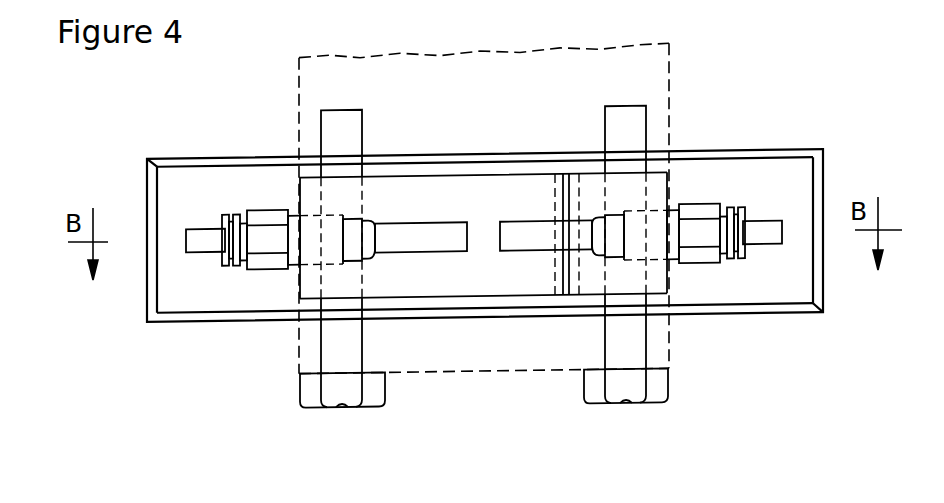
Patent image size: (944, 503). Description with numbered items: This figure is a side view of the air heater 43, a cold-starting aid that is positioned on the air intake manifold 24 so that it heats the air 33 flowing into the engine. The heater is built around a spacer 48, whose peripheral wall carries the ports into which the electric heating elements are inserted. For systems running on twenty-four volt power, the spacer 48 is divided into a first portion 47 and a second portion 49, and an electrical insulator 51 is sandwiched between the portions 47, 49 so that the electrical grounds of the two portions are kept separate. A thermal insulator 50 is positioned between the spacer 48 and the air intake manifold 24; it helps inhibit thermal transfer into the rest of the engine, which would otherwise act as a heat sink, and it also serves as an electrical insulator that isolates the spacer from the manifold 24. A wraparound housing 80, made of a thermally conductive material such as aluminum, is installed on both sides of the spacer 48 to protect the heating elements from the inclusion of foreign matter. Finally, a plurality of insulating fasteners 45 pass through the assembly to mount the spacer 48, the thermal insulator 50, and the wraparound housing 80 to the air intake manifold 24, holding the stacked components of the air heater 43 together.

The air intake manifold 24 is at (500, 68).
The air 33 is at (488, 375).
The air heater 43 is at (768, 134).
The insulating fasteners 45 is at (352, 408).
The first portion 47 is at (660, 275).
The spacer 48 is at (298, 192).
The second portion 49 is at (320, 278).
The thermal insulator 50 is at (658, 165).
The electrical insulator 51 is at (563, 300).
The wraparound housing 80 is at (147, 160).